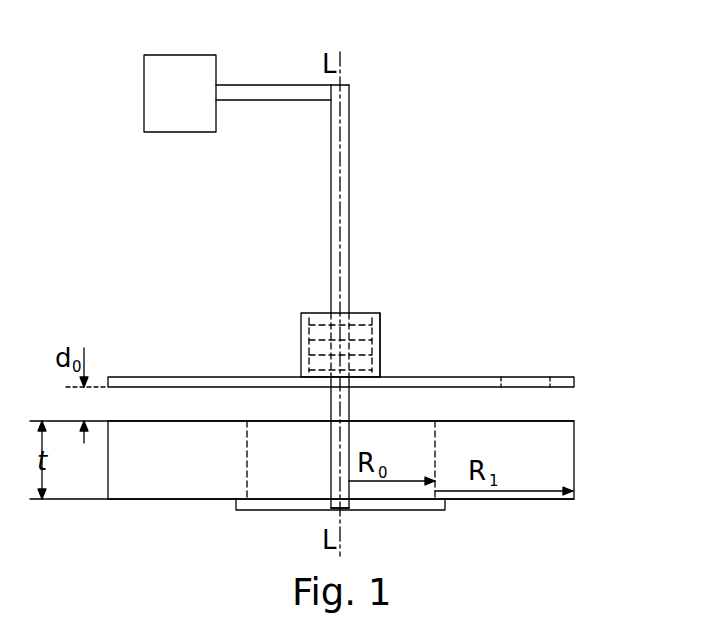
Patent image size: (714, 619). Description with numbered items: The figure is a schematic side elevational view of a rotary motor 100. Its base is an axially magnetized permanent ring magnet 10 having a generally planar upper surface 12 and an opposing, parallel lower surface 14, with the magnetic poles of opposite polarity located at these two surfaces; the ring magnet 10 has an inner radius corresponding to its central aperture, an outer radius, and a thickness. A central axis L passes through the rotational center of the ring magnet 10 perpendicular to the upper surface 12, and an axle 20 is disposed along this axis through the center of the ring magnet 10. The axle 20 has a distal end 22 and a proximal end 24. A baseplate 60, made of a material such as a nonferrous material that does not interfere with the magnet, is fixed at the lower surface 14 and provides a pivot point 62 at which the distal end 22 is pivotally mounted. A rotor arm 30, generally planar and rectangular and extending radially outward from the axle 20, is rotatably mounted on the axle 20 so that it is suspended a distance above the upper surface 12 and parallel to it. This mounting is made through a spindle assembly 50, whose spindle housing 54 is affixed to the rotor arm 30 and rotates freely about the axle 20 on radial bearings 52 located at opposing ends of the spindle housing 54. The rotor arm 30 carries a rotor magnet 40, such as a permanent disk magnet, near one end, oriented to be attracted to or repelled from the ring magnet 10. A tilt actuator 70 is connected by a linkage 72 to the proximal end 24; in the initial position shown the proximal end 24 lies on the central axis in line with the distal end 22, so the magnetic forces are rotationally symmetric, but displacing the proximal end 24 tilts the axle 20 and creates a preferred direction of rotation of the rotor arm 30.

The ring magnet 10 is at (574, 480).
The upper surface 12 is at (573, 418).
The lower surface 14 is at (122, 500).
The axle 20 is at (350, 200).
The distal end 22 is at (352, 504).
The proximal end 24 is at (341, 84).
The rotor arm 30 is at (564, 376).
The rotor magnet 40 is at (538, 376).
The spindle assembly 50 is at (380, 318).
The radial bearings 52 is at (309, 333).
The spindle housing 54 is at (380, 352).
The baseplate 60 is at (447, 508).
The pivot point 62 is at (333, 507).
The tilt actuator 70 is at (197, 108).
The linkage 72 is at (270, 85).
The rotary motor 100 is at (470, 131).